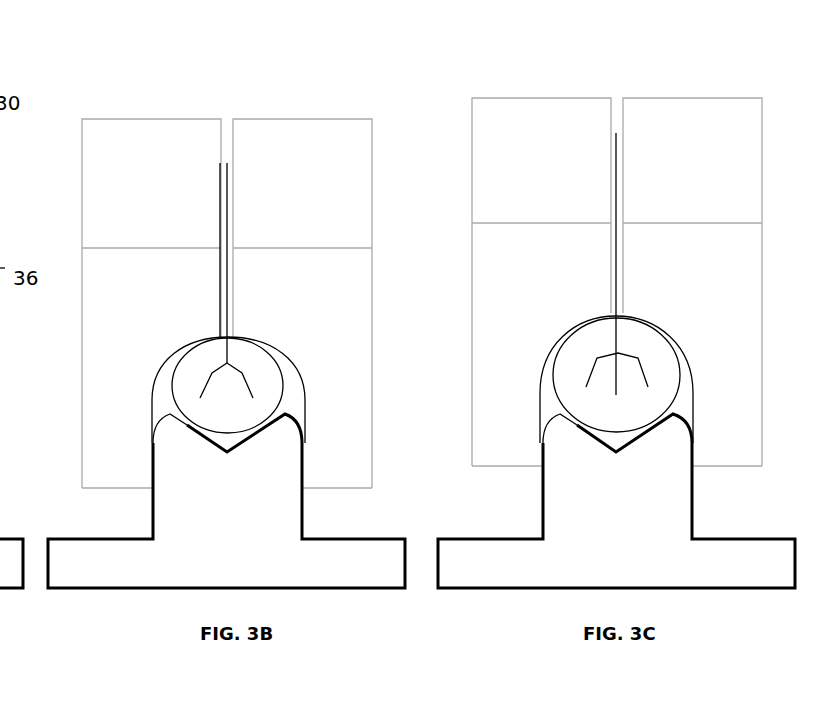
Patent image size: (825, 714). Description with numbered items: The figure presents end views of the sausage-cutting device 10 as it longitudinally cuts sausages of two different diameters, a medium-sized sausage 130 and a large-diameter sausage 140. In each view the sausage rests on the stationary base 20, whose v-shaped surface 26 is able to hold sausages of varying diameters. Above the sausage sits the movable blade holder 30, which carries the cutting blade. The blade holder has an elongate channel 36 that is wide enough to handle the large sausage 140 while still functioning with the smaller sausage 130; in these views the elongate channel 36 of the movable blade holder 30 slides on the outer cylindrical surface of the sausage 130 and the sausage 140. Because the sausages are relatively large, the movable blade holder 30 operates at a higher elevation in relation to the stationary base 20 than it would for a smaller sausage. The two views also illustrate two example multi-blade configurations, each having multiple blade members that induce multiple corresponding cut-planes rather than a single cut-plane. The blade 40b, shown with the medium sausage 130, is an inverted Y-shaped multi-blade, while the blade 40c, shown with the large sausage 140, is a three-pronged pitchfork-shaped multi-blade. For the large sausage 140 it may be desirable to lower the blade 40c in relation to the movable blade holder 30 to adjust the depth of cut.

In FIG. 3B, the sausage-cutting device 10 is at (184, 86).
In FIG. 3C, the sausage-cutting device 10 is at (593, 54).
In FIG. 3B, the stationary base 20 is at (150, 604).
In FIG. 3C, the stationary base 20 is at (527, 604).
In FIG. 3B, the v-shaped surface 26 is at (207, 433).
In FIG. 3C, the v-shaped surface 26 is at (595, 433).
In FIG. 3B, the movable blade holder 30 is at (363, 107).
In FIG. 3C, the movable blade holder 30 is at (672, 84).
In FIG. 3B, the elongate channel 36 is at (285, 367).
In FIG. 3C, the elongate channel 36 is at (682, 353).
In FIG. 3B, the blade 40b is at (222, 388).
In FIG. 3C, the blade 40c is at (600, 388).
In FIG. 3B, the sausage 130 is at (172, 385).
In FIG. 3C, the sausage 140 is at (554, 378).